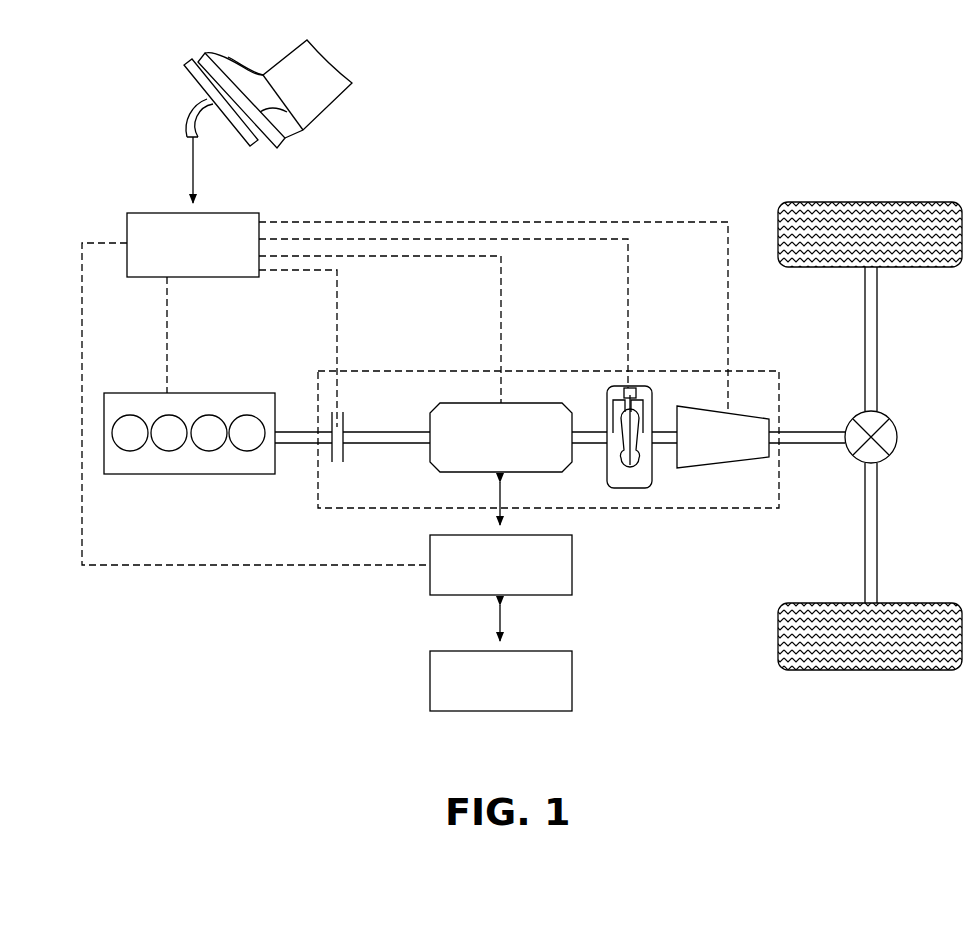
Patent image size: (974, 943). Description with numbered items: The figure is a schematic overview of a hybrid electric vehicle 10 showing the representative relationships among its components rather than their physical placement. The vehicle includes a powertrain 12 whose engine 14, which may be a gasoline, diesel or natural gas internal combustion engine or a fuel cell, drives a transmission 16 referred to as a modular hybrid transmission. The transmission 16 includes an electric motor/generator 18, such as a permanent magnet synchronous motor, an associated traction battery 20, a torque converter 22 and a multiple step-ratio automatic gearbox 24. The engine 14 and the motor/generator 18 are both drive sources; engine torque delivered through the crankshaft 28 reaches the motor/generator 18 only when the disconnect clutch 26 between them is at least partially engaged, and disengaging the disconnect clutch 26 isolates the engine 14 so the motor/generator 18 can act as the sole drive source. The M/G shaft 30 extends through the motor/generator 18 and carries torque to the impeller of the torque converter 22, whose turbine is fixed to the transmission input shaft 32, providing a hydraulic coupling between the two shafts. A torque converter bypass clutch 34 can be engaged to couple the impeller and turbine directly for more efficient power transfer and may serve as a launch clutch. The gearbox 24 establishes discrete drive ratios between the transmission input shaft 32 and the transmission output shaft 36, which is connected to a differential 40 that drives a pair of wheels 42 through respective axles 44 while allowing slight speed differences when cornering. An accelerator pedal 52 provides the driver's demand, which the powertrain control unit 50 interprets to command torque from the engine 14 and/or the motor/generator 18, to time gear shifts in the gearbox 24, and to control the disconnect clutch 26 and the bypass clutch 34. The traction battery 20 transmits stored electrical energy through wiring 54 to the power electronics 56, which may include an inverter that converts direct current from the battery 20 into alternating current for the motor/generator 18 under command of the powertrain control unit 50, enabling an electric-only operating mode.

The hybrid electric vehicle 10 is at (664, 124).
The powertrain 12 is at (253, 589).
The engine 14 is at (147, 393).
The transmission 16 is at (591, 371).
The electric motor/generator 18 is at (480, 403).
The traction battery 20 is at (572, 678).
The torque converter 22 is at (630, 488).
The gearbox 24 is at (715, 466).
The disconnect clutch 26 is at (345, 427).
The crankshaft 28 is at (307, 430).
The M/G shaft 30 is at (405, 430).
The transmission input shaft 32 is at (662, 432).
The torque converter bypass clutch 34 is at (629, 389).
The transmission output shaft 36 is at (808, 430).
The differential 40 is at (898, 437).
The wheels 42 is at (872, 202).
The axles 44 is at (878, 342).
The powertrain control unit 50 is at (157, 213).
The accelerator pedal 52 is at (197, 95).
The wiring 54 is at (506, 622).
The power electronics 56 is at (572, 565).